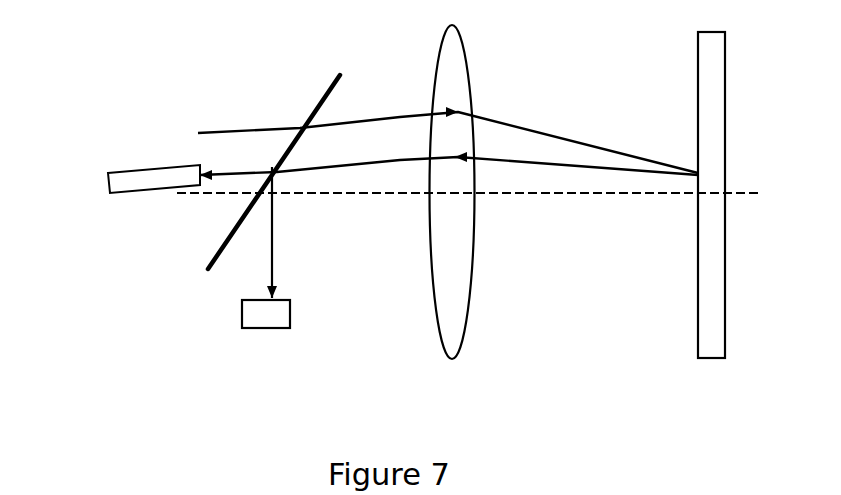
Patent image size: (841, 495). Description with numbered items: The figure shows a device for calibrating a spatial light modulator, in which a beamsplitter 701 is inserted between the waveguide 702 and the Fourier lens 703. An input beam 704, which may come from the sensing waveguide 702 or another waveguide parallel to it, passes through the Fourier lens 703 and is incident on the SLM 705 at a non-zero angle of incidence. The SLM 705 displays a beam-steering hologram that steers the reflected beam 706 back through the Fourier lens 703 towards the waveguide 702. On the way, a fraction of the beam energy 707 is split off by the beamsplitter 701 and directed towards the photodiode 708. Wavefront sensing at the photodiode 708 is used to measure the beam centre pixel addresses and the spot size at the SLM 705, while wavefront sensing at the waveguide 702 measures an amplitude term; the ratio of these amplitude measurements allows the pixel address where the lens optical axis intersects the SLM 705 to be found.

The beamsplitter 701 is at (317, 90).
The waveguide 702 is at (162, 167).
The Fourier lens 703 is at (457, 72).
The input beam 704 is at (508, 122).
The SLM 705 is at (707, 82).
The reflected beam 706 is at (505, 167).
The fraction of the beam energy 707 is at (278, 223).
The photodiode 708 is at (242, 312).